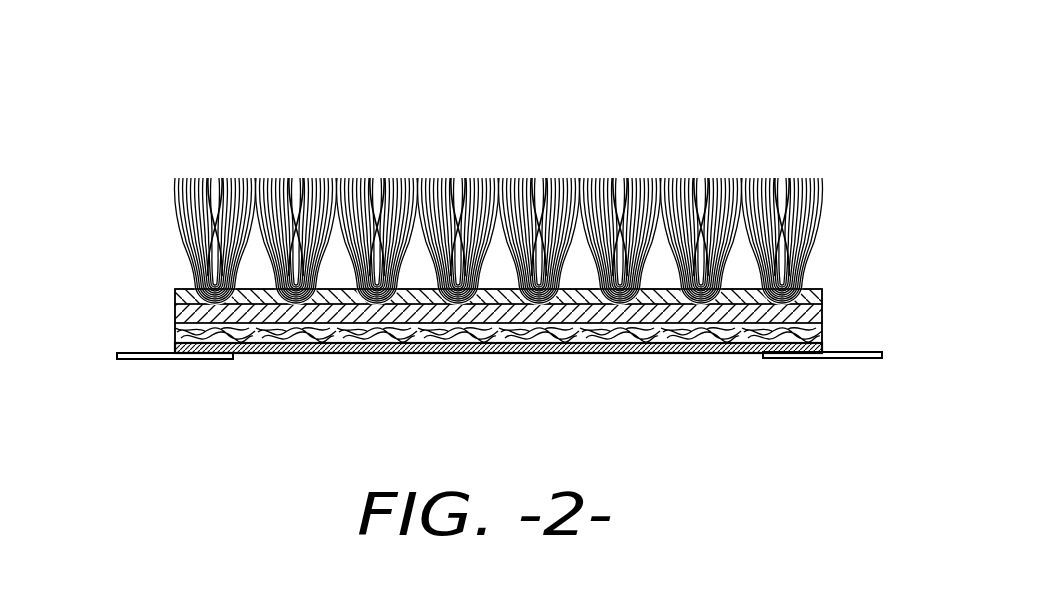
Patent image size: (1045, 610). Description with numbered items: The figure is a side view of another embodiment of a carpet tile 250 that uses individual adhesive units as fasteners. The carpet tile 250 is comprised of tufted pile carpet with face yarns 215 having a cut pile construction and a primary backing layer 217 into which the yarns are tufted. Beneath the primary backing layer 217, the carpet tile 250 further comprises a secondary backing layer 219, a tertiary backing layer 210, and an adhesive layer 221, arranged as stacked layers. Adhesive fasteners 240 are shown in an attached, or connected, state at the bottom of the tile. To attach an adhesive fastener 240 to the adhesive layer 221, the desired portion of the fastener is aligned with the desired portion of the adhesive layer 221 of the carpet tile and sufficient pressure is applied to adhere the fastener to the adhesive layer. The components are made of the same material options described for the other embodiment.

The carpet tile 250 is at (193, 123).
The face yarns 215 is at (600, 242).
The primary backing layer 217 is at (492, 297).
The secondary backing layer 219 is at (327, 325).
The tertiary backing layer 210 is at (690, 333).
The adhesive layer 221 is at (618, 347).
The adhesive fasteners 240 is at (118, 355).